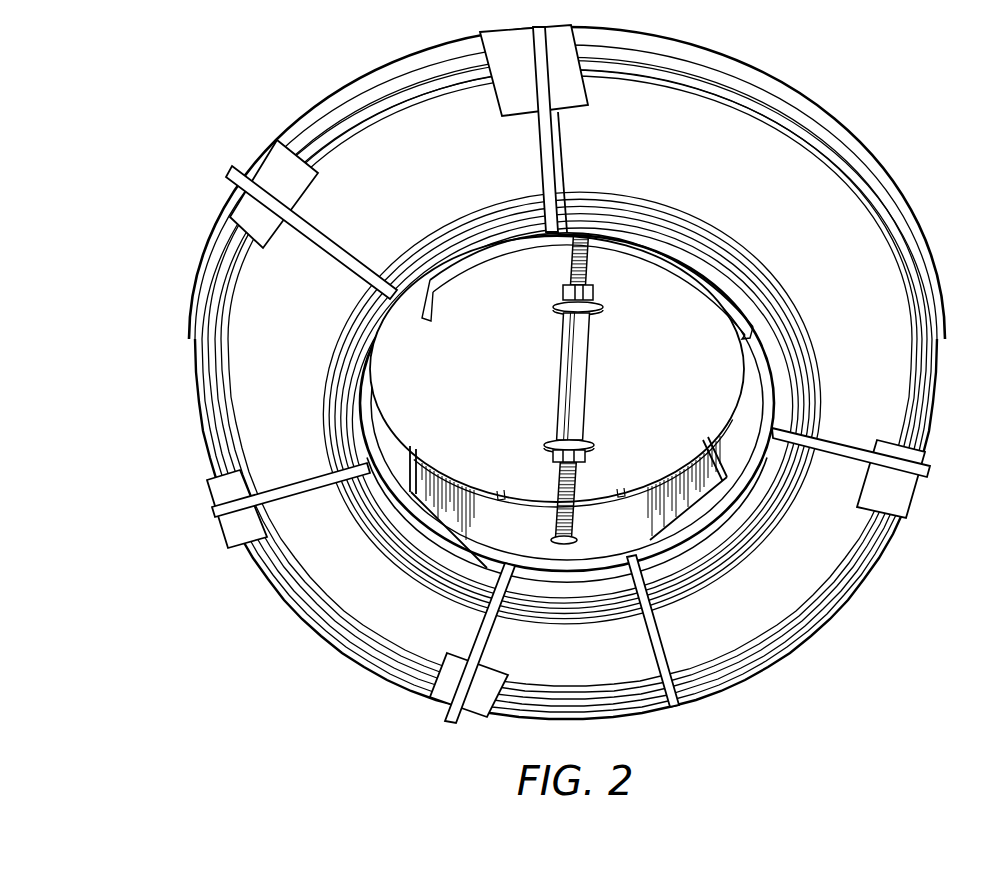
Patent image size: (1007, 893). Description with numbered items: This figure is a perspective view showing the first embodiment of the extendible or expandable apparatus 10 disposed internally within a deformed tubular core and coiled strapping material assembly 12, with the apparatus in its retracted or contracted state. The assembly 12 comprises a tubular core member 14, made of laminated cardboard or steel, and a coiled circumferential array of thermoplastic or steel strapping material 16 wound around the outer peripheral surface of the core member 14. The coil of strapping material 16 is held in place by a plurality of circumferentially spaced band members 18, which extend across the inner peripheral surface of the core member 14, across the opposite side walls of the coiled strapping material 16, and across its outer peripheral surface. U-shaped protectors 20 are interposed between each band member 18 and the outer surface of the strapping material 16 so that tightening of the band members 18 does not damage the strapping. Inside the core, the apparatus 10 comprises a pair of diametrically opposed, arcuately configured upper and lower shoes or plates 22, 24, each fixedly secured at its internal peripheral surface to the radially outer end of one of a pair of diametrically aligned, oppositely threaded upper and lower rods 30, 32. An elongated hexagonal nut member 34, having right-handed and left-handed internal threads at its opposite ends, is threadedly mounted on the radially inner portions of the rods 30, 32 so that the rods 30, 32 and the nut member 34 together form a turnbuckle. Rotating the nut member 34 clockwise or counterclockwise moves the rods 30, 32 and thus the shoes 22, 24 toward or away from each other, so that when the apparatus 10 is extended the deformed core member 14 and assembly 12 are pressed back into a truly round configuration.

The apparatus 10 is at (650, 325).
The tubular core and coiled strapping material assembly 12 is at (872, 148).
The tubular core member 14 is at (389, 447).
The strapping material 16 is at (783, 623).
The band members 18 is at (548, 140).
The U-shaped protectors 20 is at (287, 190).
The upper shoe or plate 22 is at (480, 262).
The lower shoe or plate 24 is at (663, 480).
The upper threaded bar or rod 30 is at (588, 258).
The lower threaded bar or rod 32 is at (553, 497).
The elongated hexagonal nut member 34 is at (567, 387).